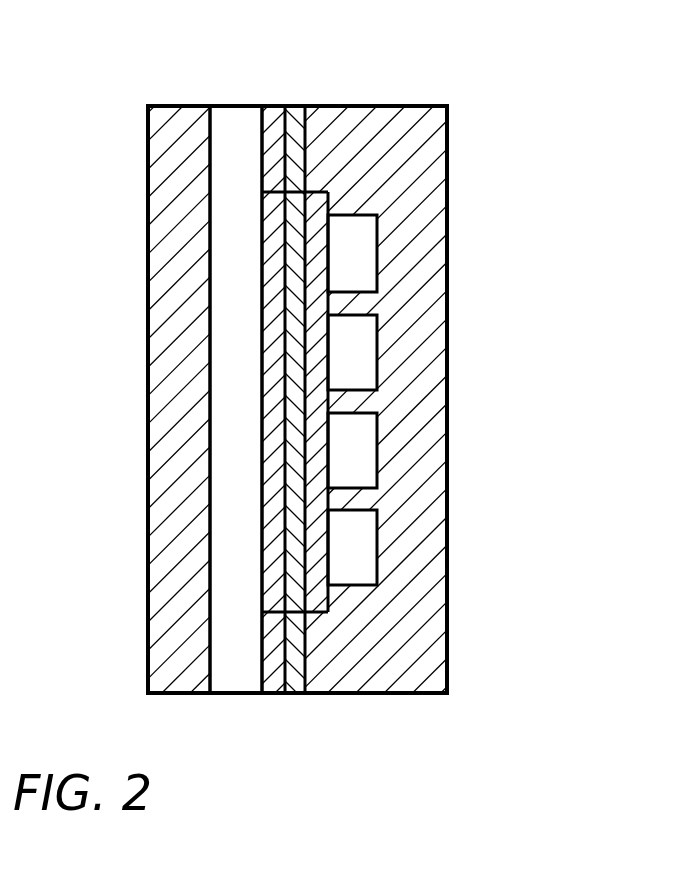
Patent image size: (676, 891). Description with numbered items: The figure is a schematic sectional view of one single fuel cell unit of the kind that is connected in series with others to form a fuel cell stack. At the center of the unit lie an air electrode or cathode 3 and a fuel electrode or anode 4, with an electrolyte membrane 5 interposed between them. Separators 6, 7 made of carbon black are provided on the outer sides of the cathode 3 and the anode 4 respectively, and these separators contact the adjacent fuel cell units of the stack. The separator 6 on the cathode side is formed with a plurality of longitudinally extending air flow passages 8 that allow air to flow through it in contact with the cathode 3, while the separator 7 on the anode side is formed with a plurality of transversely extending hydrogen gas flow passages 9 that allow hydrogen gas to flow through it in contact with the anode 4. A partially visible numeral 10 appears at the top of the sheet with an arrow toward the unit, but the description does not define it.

The air electrode or cathode 3 is at (268, 513).
The fuel electrode or anode 4 is at (322, 605).
The electrolyte membrane 5 is at (297, 687).
The separator 6 is at (182, 106).
The separator 7 is at (350, 106).
The air flow passages 8 is at (228, 277).
The hydrogen gas flow passages 9 is at (377, 268).
The heater assembly 10 is at (515, 0).